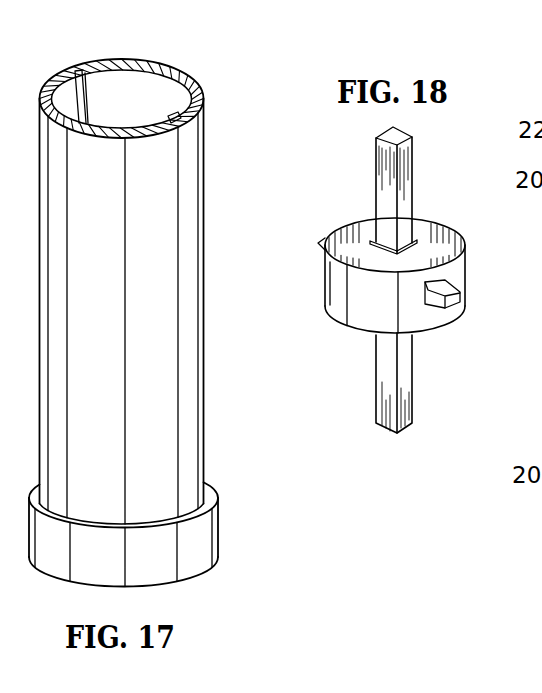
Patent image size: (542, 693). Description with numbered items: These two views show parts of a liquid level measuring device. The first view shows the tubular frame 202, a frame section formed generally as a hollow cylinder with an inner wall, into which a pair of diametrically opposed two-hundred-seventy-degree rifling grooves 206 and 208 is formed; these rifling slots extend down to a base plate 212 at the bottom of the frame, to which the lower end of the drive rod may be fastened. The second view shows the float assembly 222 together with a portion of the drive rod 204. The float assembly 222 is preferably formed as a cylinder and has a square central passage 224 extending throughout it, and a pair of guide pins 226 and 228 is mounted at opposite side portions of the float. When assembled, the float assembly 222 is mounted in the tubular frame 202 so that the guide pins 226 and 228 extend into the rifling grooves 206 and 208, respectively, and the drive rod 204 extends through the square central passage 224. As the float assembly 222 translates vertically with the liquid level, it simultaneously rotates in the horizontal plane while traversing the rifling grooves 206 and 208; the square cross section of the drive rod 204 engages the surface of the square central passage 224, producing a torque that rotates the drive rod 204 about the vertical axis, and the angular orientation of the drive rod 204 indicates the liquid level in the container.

In FIG. 17, the tubular frame 202 is at (205, 358).
In FIG. 18, the drive rod 204 is at (413, 380).
In FIG. 17, the rifling groove 206 is at (167, 122).
In FIG. 17, the rifling groove 208 is at (85, 97).
In FIG. 17, the base plate 212 is at (218, 510).
In FIG. 18, the float assembly 222 is at (322, 292).
In FIG. 18, the square central passage 224 is at (408, 241).
In FIG. 18, the guide pin 226 is at (458, 300).
In FIG. 18, the guide pin 228 is at (318, 243).